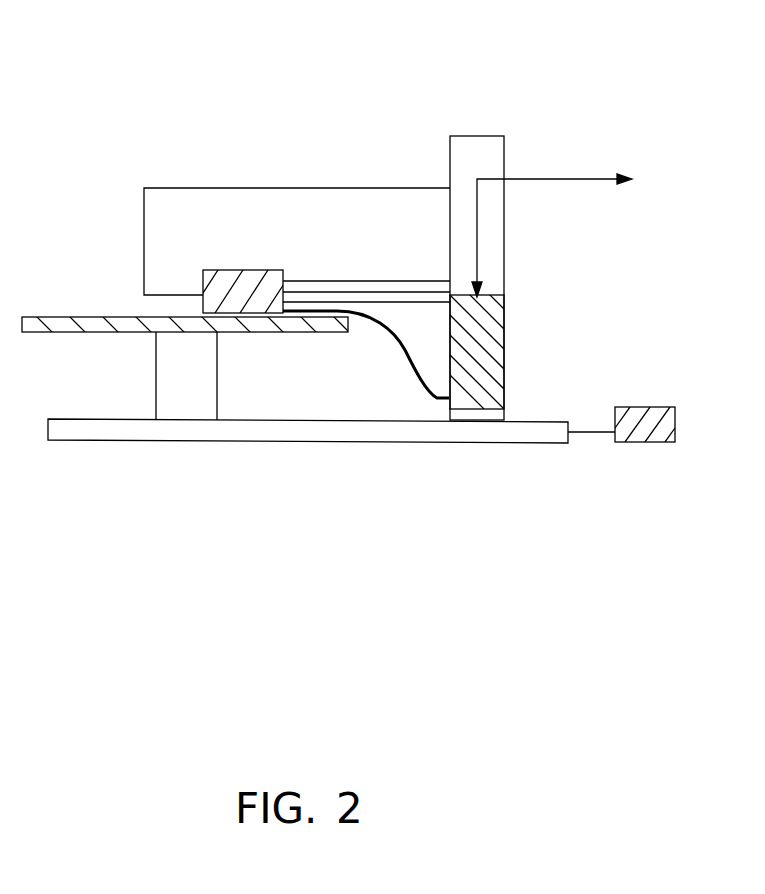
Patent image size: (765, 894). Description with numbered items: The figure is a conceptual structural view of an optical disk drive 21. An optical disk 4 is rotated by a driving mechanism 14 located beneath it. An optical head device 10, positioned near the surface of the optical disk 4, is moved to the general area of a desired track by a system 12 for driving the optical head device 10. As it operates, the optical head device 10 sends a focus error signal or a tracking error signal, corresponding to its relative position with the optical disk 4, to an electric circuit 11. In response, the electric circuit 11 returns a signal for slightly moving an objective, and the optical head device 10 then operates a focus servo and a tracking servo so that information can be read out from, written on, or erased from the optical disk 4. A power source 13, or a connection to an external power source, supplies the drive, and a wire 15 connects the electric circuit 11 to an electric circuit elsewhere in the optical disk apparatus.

The optical disk drive 21 is at (118, 110).
The system for driving the optical head device 12 is at (320, 190).
The electric circuit 11 is at (504, 340).
The optical head device 10 is at (242, 270).
The optical disk 4 is at (90, 317).
The driving mechanism 14 is at (155, 380).
The power source 13 is at (638, 442).
The wire 15 is at (570, 182).